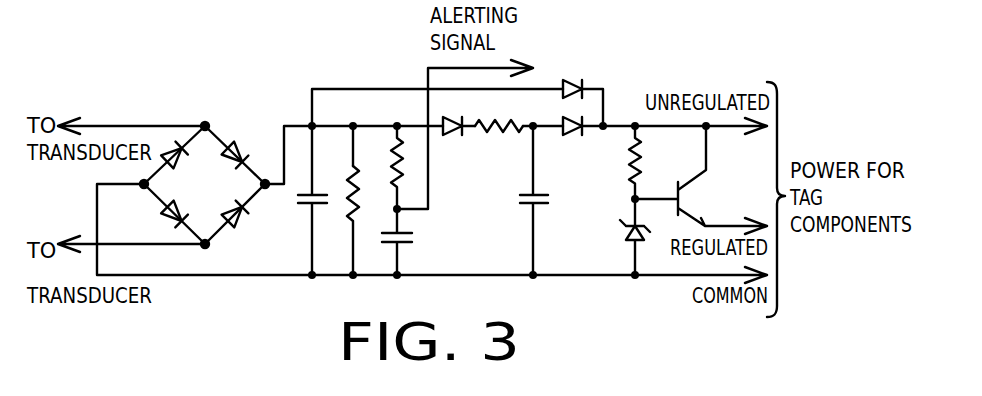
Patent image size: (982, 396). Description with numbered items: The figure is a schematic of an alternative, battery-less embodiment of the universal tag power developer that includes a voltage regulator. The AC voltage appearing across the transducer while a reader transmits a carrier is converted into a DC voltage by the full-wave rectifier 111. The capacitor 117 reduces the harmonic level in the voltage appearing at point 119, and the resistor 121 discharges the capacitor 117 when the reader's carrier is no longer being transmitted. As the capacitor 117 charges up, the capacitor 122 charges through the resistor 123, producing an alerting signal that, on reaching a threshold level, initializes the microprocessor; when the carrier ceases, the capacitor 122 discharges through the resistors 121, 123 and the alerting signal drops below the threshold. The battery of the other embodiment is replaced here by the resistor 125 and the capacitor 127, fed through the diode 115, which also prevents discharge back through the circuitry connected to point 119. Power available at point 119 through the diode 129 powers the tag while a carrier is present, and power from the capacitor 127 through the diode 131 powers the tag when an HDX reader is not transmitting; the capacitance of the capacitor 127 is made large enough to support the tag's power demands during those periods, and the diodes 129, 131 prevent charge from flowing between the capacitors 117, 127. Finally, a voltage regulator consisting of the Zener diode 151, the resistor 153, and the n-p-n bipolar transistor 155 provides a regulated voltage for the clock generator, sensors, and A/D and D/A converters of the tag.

The full-wave rectifier 111 is at (203, 122).
The diode 115 is at (452, 136).
The capacitor 117 is at (303, 209).
The point 119 is at (352, 123).
The resistor 121 is at (345, 188).
The capacitor 122 is at (410, 243).
The resistor 123 is at (392, 160).
The resistor 125 is at (497, 134).
The capacitor 127 is at (548, 205).
The diode 129 is at (570, 80).
The diode 131 is at (573, 136).
The Zener diode 151 is at (625, 234).
The resistor 153 is at (670, 156).
The n-p-n bipolar transistor 155 is at (738, 183).